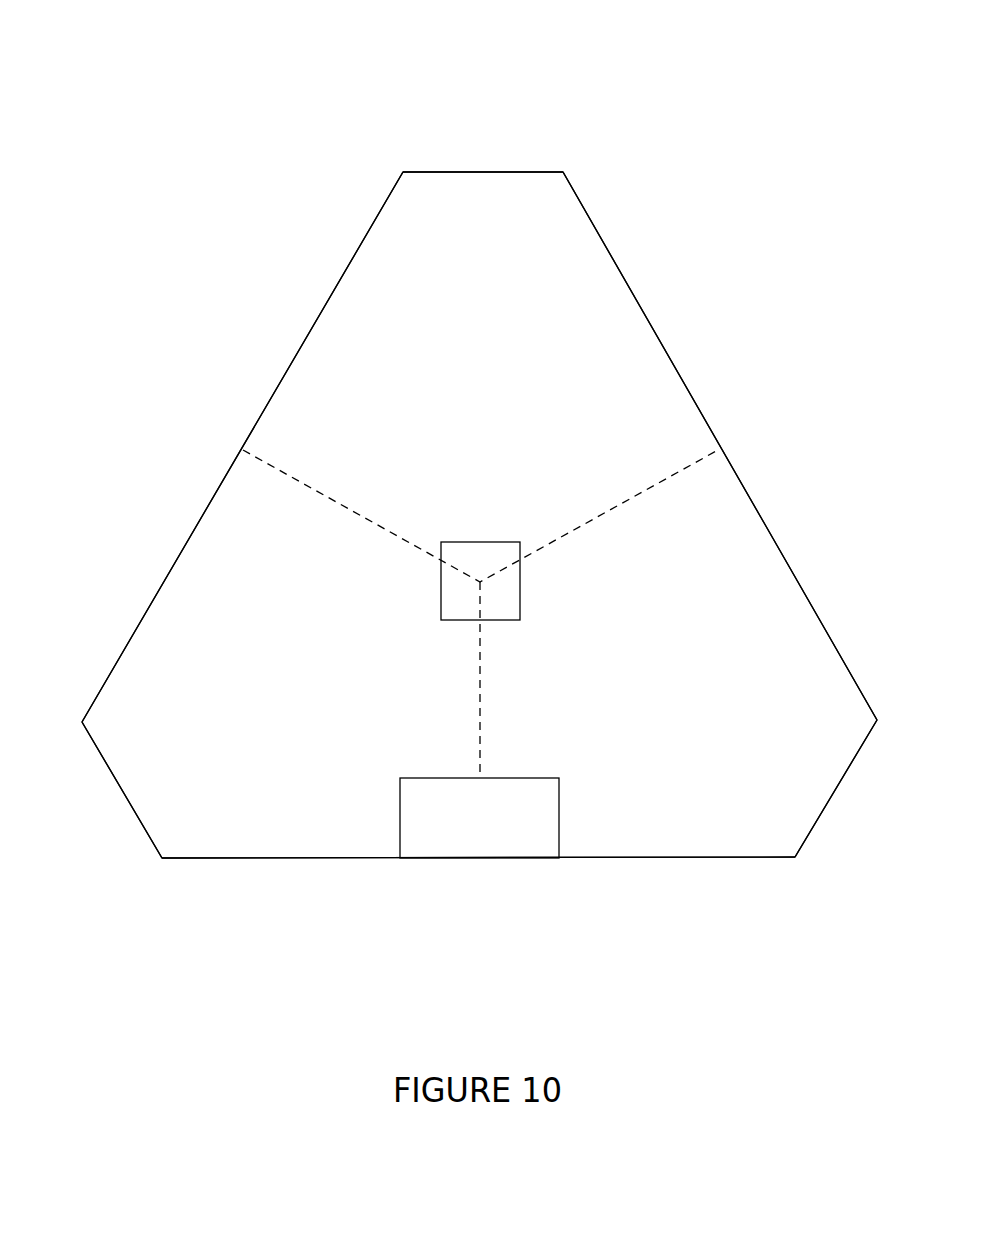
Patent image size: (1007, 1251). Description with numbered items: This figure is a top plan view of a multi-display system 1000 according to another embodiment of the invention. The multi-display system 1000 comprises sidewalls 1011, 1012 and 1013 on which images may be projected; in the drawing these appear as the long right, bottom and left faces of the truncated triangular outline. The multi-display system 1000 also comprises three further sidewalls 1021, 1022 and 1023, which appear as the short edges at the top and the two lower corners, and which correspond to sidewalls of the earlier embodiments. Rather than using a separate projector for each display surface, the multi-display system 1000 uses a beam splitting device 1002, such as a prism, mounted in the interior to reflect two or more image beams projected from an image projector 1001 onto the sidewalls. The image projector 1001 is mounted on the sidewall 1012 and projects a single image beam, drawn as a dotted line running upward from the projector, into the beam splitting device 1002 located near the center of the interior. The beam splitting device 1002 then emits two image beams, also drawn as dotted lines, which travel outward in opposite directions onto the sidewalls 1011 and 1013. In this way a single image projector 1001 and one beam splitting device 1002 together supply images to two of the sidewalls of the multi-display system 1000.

The multi-display system 1000 is at (800, 102).
The image projector 1001 is at (561, 819).
The beam splitting device 1002 is at (522, 600).
The sidewall 1011 is at (660, 342).
The sidewall 1012 is at (280, 859).
The sidewall 1013 is at (302, 342).
The sidewall 1021 is at (443, 171).
The sidewall 1022 is at (118, 789).
The sidewall 1023 is at (838, 787).